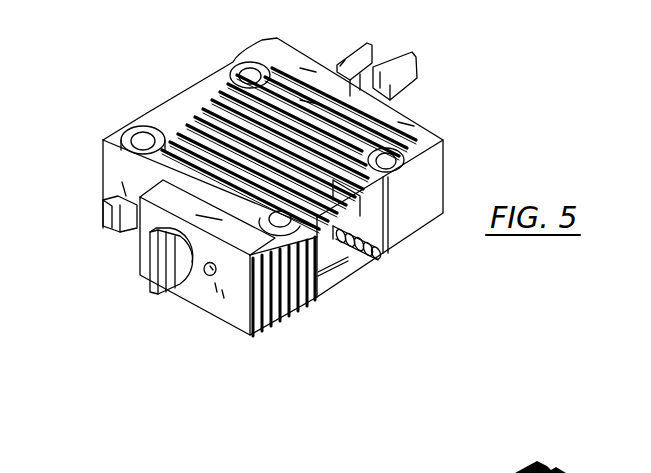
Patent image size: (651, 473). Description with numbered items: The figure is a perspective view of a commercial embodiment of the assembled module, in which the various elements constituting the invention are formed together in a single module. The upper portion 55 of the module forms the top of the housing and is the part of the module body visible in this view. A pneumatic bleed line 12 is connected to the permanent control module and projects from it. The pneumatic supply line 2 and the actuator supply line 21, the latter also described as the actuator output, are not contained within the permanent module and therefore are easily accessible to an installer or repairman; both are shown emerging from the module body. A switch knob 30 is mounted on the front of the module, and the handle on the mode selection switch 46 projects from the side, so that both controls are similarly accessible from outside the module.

The upper portion of the module 55 is at (190, 84).
The pneumatic bleed line 12 is at (380, 70).
The mode selection switch 46 is at (103, 213).
The switch knob 30 is at (147, 283).
The pneumatic supply line 2 is at (376, 253).
The actuator supply line 21 is at (343, 262).